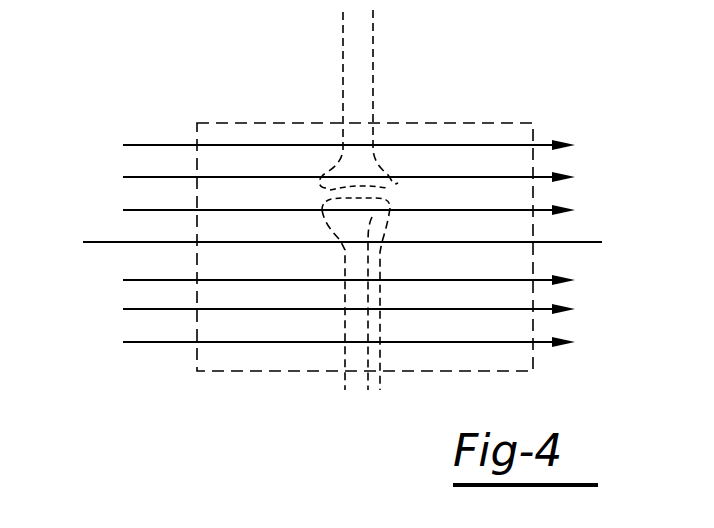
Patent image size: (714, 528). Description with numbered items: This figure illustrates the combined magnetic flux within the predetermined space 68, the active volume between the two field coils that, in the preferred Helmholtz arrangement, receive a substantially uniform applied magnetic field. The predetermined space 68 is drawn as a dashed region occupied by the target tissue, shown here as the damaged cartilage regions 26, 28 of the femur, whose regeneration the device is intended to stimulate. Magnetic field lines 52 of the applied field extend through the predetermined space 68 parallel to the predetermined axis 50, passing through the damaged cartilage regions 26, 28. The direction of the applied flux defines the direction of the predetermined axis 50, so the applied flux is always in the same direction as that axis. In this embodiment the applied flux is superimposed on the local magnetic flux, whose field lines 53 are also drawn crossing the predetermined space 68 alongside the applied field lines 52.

The predetermined space 68 is at (251, 115).
The damaged region of articular cartilage 28 is at (321, 183).
The damaged region of articular cartilage 26 is at (400, 181).
The magnetic field lines 52 is at (551, 145).
The field lines of local flux component 53 is at (546, 178).
The predetermined axis 50 is at (103, 242).